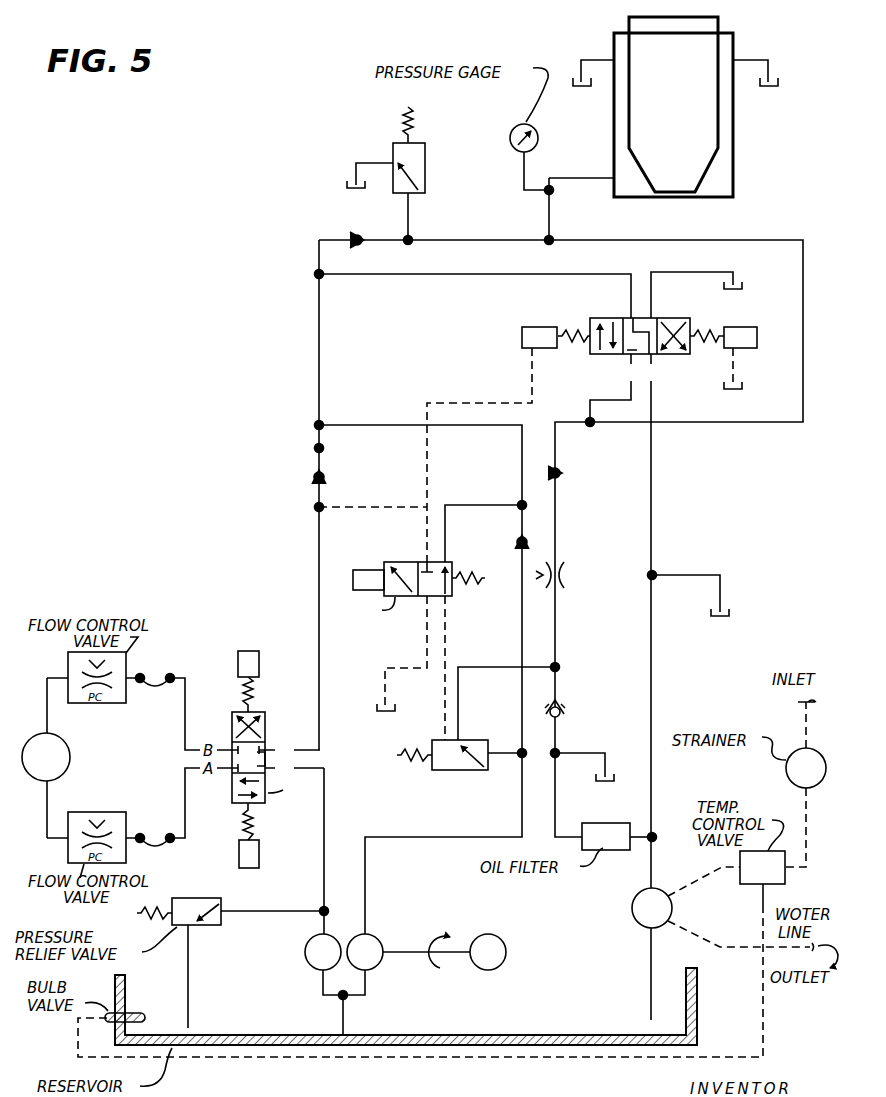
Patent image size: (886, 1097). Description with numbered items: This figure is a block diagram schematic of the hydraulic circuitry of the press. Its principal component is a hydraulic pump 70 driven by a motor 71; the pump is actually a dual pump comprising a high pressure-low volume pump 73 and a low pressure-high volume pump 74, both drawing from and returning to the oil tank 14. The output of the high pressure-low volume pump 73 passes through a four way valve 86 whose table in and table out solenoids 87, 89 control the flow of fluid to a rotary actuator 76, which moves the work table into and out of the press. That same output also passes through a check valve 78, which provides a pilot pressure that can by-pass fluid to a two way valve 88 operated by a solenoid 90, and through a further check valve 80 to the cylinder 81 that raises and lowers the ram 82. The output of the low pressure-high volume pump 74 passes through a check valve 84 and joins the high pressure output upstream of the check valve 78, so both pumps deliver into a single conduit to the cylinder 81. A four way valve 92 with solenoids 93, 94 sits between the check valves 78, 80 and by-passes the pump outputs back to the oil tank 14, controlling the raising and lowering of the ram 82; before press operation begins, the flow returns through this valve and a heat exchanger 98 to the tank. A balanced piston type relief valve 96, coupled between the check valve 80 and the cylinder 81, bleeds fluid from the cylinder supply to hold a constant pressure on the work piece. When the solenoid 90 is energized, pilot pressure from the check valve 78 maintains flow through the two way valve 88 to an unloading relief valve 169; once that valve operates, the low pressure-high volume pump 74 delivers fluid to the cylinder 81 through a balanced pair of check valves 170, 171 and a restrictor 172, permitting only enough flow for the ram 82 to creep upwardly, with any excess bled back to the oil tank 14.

The oil tank 14 is at (526, 1030).
The hydraulic pump 70 is at (362, 901).
The motor 71 is at (488, 970).
The high pressure-low volume pump 73 is at (308, 968).
The low pressure-high volume pump 74 is at (378, 968).
The rotary actuator 76 is at (72, 752).
The check valve 78 is at (318, 478).
The check valve 80 is at (352, 238).
The cylinder 81 is at (775, 143).
The ram 82 is at (673, 104).
The check valve 84 is at (519, 543).
The four way valve 86 is at (265, 722).
The solenoid 87 is at (272, 854).
The two way valve 88 is at (403, 562).
The solenoid 89 is at (258, 657).
The solenoid 90 is at (368, 570).
The four way valve 92 is at (607, 317).
The solenoid 93 is at (522, 338).
The solenoid 94 is at (757, 338).
The balanced piston type relief valve 96 is at (395, 152).
The heat exchanger 98 is at (632, 913).
The unloading relief valve 169 is at (460, 767).
The check valve 170 is at (583, 470).
The check valve 171 is at (586, 699).
The restrictor 172 is at (590, 572).